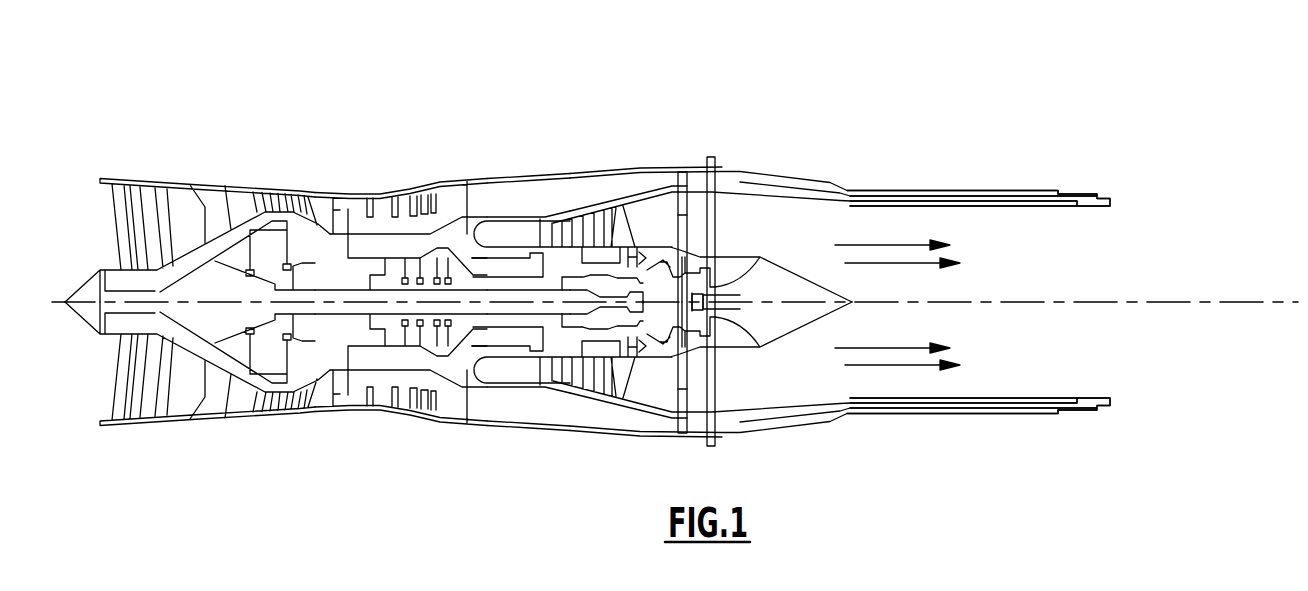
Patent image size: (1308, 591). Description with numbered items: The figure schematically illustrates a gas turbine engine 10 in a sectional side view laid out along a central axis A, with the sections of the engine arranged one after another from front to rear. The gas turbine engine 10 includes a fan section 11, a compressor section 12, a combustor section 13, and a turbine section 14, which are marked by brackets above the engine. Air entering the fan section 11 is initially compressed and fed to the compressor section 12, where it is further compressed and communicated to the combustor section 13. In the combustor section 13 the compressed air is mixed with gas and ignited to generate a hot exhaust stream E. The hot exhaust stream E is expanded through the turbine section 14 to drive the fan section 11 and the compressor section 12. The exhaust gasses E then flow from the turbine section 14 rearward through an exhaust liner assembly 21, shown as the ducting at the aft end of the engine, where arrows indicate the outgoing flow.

The gas turbine engine 10 is at (848, 55).
The fan section 11 is at (313, 110).
The compressor section 12 is at (485, 110).
The combustor section 13 is at (568, 110).
The turbine section 14 is at (733, 110).
The exhaust liner assembly 21 is at (1011, 190).
The engine central longitudinal axis A is at (1270, 302).
The hot exhaust stream E is at (907, 375).